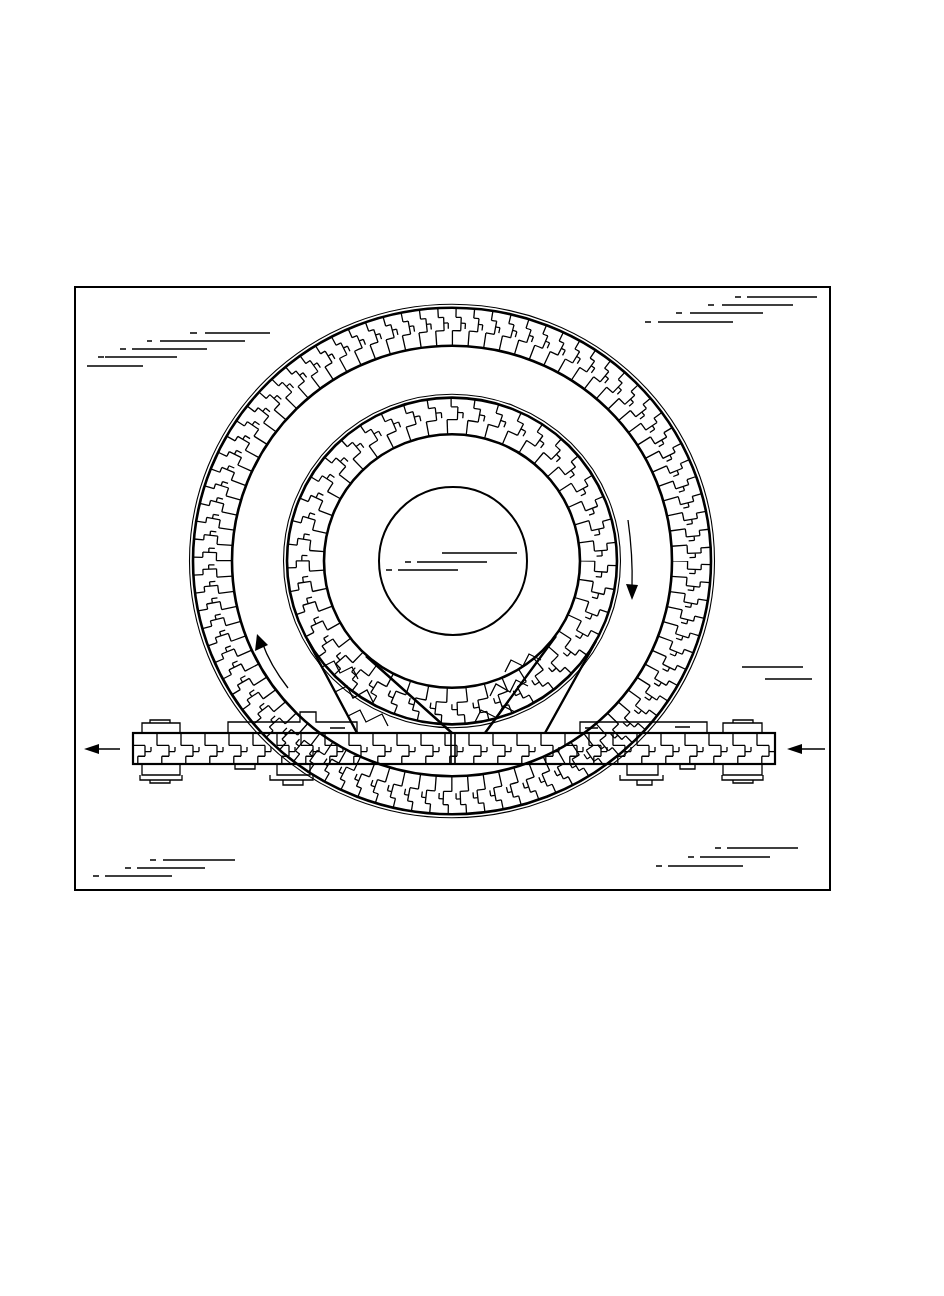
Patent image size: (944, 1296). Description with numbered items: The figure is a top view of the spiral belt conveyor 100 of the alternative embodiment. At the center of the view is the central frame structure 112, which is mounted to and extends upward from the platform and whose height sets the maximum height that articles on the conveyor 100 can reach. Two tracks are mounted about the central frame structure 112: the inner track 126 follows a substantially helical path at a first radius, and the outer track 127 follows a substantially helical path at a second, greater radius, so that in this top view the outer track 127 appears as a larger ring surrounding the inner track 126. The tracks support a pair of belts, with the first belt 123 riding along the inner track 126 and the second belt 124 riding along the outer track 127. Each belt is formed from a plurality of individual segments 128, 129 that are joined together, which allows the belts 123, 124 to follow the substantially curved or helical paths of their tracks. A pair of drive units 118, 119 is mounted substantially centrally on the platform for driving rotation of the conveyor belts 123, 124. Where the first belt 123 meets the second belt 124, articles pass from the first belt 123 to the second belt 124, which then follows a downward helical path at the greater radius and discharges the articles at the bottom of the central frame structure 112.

The spiral belt conveyor 100 is at (62, 96).
The central frame structure 112 is at (453, 488).
The drive unit 118 is at (637, 782).
The drive unit 119 is at (287, 772).
The first conveyor belt 123 is at (598, 470).
The second conveyor belt 124 is at (202, 487).
The inner track 126 is at (452, 542).
The outer track 127 is at (416, 560).
The individual segments 128 is at (452, 560).
The individual segments 129 is at (497, 560).